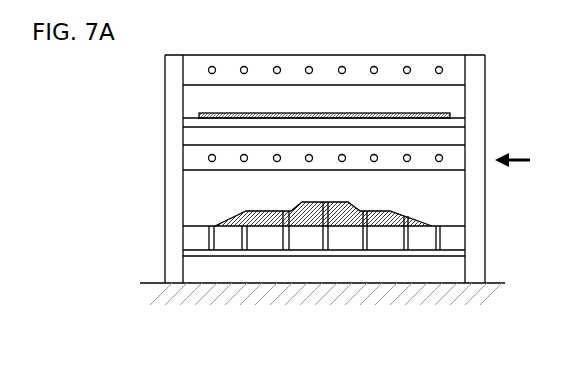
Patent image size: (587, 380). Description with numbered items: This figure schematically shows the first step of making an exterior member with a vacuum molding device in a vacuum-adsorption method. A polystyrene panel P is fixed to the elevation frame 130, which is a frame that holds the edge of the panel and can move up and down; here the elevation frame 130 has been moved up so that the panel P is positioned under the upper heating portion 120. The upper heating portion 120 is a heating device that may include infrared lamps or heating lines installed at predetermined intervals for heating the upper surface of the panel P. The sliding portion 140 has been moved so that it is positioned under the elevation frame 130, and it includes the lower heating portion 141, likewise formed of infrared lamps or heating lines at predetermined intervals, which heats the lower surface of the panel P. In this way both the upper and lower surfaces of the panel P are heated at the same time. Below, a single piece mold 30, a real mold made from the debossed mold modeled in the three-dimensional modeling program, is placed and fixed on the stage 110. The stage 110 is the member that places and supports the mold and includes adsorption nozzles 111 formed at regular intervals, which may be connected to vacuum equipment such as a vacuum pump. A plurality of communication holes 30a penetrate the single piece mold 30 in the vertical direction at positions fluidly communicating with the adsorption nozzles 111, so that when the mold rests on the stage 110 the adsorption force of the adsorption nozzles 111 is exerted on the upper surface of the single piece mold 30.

The upper heating portion 120 is at (340, 66).
The panel P is at (224, 112).
The elevation frame 130 is at (185, 119).
The sliding portion 140 is at (452, 145).
The lower heating portion 141 is at (443, 161).
The stage 110 is at (187, 225).
The adsorption nozzle 111 is at (405, 257).
The single piece mold 30 is at (257, 219).
The communication hole 30a is at (300, 228).